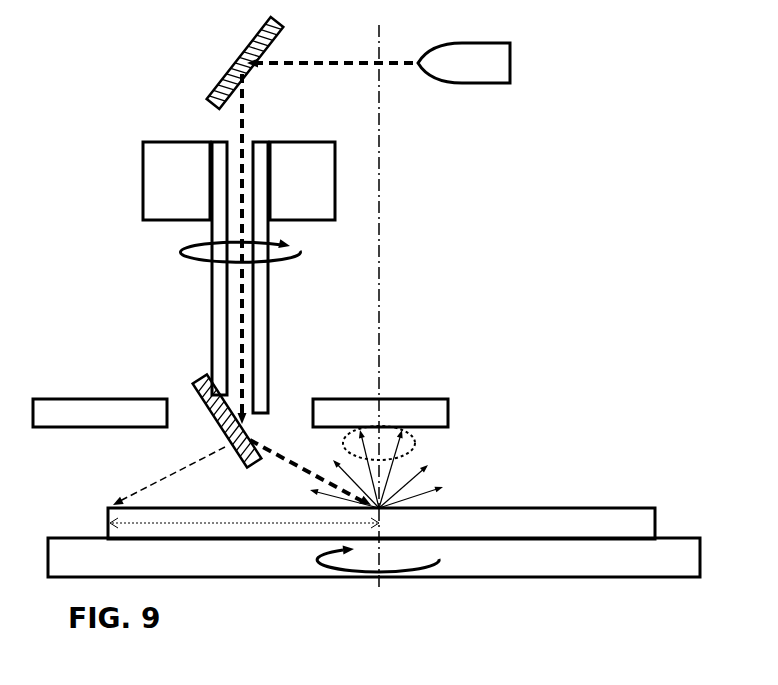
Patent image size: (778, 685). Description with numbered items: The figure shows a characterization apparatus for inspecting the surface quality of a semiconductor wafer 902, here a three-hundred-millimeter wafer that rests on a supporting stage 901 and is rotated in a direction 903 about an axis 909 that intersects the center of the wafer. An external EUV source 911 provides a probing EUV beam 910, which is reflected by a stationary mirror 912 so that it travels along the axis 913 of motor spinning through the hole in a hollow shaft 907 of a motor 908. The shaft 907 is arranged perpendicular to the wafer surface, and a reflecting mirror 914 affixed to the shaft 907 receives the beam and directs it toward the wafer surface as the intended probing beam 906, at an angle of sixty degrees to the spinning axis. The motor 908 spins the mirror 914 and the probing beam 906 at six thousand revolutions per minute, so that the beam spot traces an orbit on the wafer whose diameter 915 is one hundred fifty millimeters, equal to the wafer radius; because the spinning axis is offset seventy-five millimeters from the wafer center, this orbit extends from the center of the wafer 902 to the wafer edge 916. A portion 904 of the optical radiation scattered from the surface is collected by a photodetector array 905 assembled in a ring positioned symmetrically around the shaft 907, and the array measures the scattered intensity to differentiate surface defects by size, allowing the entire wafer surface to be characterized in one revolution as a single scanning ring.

The chuck / stage 901 is at (680, 538).
The semiconductor wafer 902 is at (575, 523).
The direction of wafer rotation 903 is at (440, 557).
The portion of scattered optical radiation 904 is at (413, 441).
The photodetector array 905 is at (95, 413).
The probing beam 906 is at (288, 458).
The hollow shaft 907 is at (270, 275).
The motor 908 is at (307, 197).
The axis of wafer rotation 909 is at (379, 147).
The EUV beam 910 is at (337, 65).
The EUV source 911 is at (510, 63).
The stationary mirror 912 is at (235, 48).
The axis of motor spinning 913 is at (240, 127).
The reflecting mirror 914 is at (217, 433).
The diameter of the probing beam spot orbit 915 is at (227, 522).
The wafer edge 916 is at (110, 503).